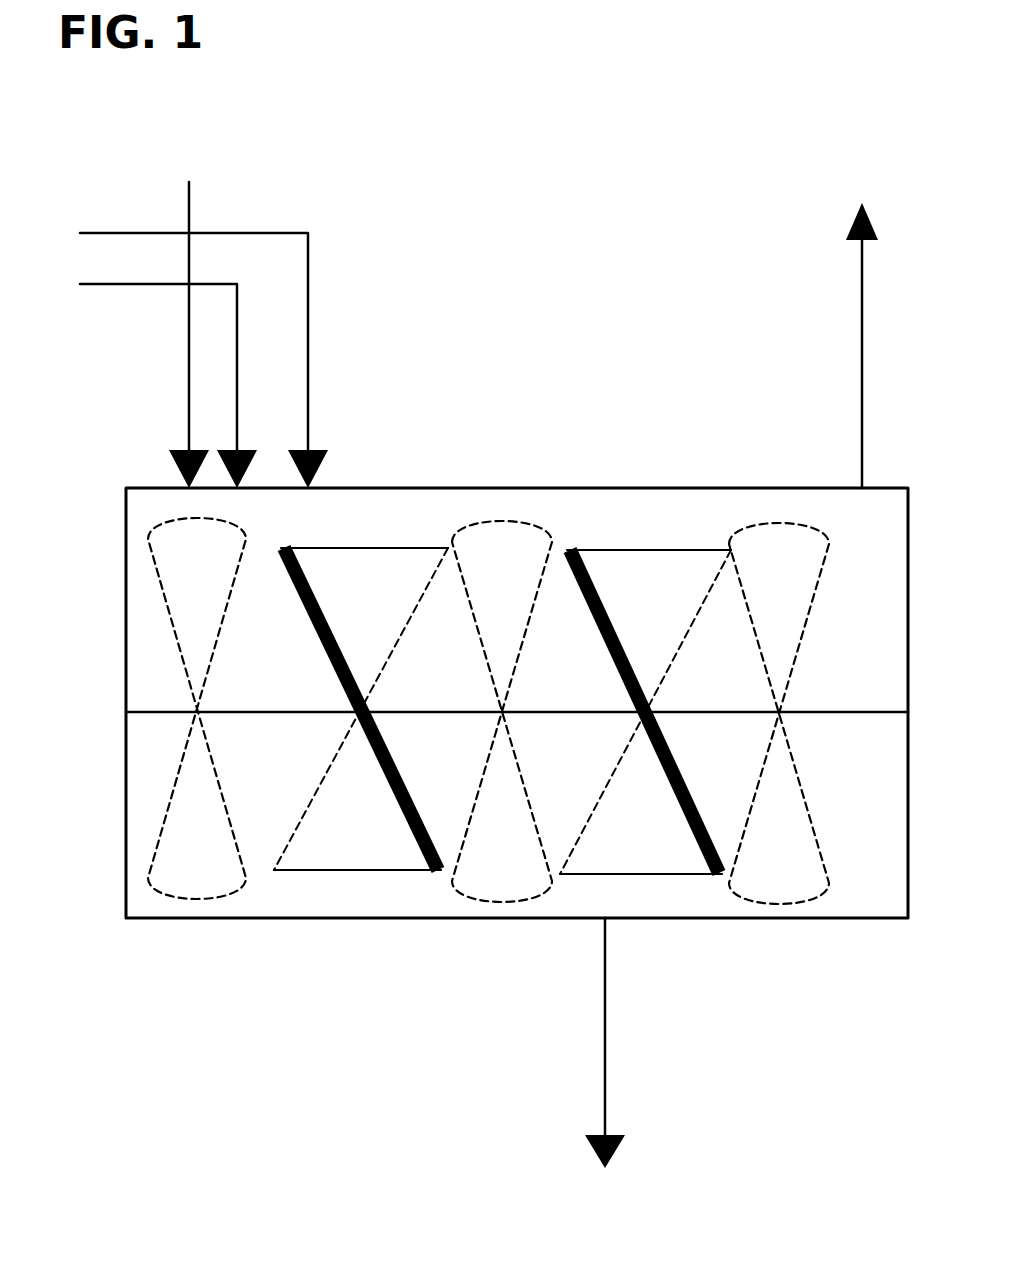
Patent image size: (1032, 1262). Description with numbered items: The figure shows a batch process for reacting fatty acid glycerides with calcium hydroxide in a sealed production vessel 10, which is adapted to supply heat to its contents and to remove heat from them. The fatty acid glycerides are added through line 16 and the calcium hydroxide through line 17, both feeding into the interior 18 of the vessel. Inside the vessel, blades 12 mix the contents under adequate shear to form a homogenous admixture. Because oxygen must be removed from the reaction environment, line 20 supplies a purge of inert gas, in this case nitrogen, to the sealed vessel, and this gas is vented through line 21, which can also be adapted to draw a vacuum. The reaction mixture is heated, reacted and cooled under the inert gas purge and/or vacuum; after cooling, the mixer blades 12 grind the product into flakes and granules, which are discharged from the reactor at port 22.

The sealed production vessel 10 is at (392, 489).
The blades 12 is at (497, 553).
The line 16 is at (108, 230).
The line 17 is at (113, 288).
The interior 18 is at (595, 525).
The line 20 is at (193, 208).
The line 21 is at (868, 412).
The port 22 is at (606, 1017).